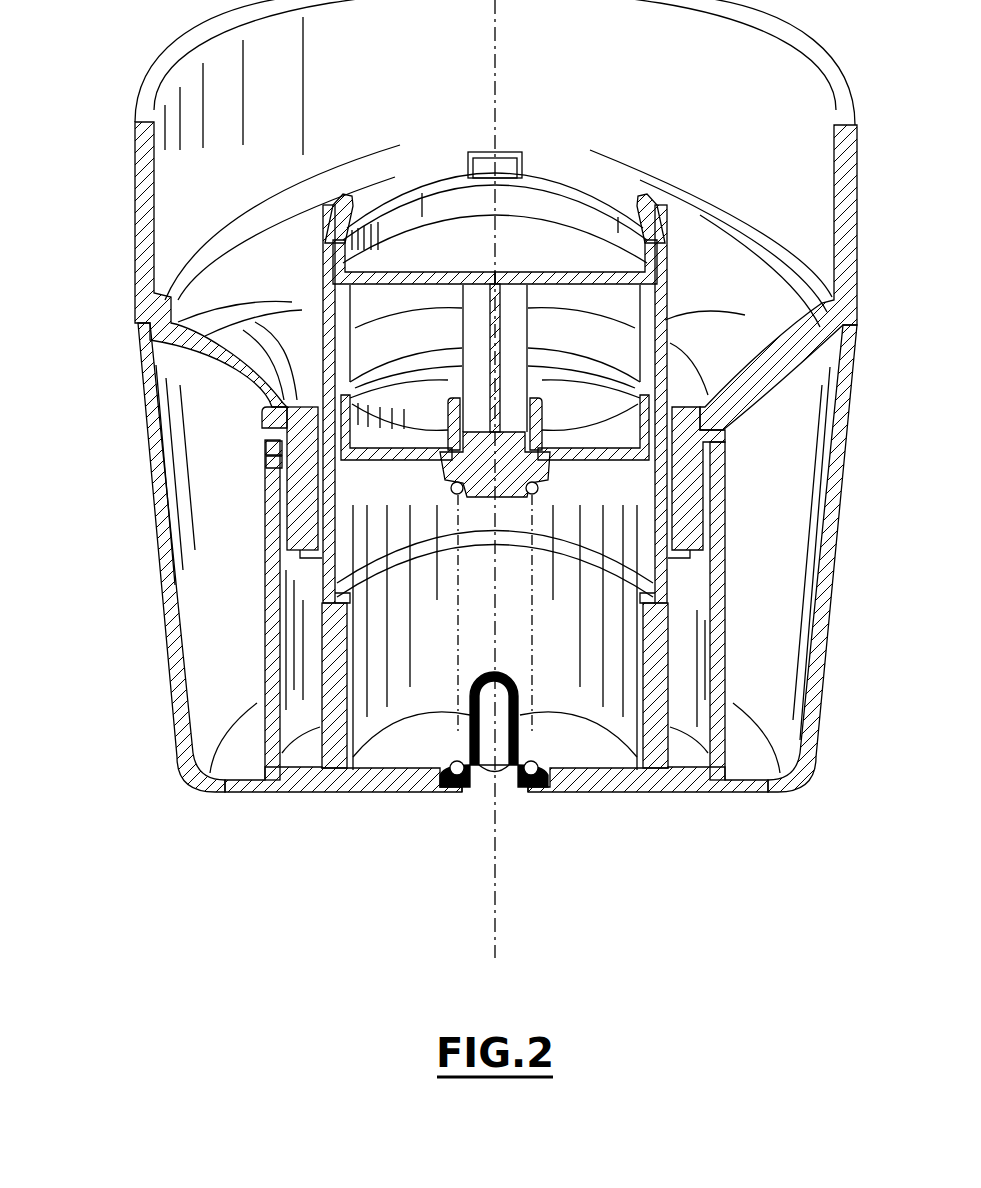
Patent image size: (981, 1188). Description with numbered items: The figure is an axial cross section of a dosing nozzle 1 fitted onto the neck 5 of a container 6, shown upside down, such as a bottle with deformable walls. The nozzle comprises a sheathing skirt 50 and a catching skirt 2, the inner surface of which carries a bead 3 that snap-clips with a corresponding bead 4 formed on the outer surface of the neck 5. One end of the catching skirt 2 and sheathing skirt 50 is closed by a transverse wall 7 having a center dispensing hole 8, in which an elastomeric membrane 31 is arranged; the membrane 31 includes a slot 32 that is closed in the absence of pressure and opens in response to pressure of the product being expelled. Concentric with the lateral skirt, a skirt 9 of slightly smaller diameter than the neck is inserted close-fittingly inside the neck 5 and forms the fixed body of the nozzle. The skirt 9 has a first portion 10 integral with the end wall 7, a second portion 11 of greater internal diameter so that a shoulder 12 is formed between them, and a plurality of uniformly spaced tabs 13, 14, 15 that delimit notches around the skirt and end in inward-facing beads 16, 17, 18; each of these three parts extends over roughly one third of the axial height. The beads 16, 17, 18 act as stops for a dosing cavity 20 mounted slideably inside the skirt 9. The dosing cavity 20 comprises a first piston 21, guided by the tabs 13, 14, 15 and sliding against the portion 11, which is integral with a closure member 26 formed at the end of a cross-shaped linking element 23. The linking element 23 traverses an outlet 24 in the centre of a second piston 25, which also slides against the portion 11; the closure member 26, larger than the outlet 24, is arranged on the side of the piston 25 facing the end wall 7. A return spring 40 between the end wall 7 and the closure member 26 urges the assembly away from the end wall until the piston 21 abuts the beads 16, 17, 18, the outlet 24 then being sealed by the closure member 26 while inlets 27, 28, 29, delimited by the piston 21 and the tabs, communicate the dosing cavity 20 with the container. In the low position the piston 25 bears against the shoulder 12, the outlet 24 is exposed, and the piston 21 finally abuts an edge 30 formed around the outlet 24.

The dosing nozzle 1 is at (98, 522).
The catching skirt 2 is at (263, 527).
The bead 3 is at (282, 454).
The bead 4 is at (282, 470).
The neck 5 is at (305, 538).
The container 6 is at (124, 230).
The transverse wall 7 is at (281, 792).
The dispensing hole 8 is at (470, 789).
The skirt 9 is at (712, 572).
The first portion 10 is at (637, 720).
The second portion 11 is at (659, 516).
The shoulder 12 is at (633, 583).
The tab 13 is at (235, 363).
The tab 14 is at (476, 133).
The tab 15 is at (680, 318).
The bead 16 is at (340, 205).
The bead 17 is at (506, 160).
The bead 18 is at (657, 203).
The dosing cavity 20 is at (388, 338).
The first piston 21 is at (452, 240).
The linking element 23 is at (512, 333).
The outlet 24 is at (477, 443).
The second piston 25 is at (380, 478).
The closure member 26 is at (564, 480).
The inlet 27 is at (262, 413).
The inlet 28 is at (385, 293).
The inlet 29 is at (602, 297).
The edge 30 is at (546, 432).
The elastomeric membrane 31 is at (522, 733).
The slot 32 is at (497, 670).
The return spring 40 is at (440, 678).
The sheathing skirt 50 is at (160, 622).